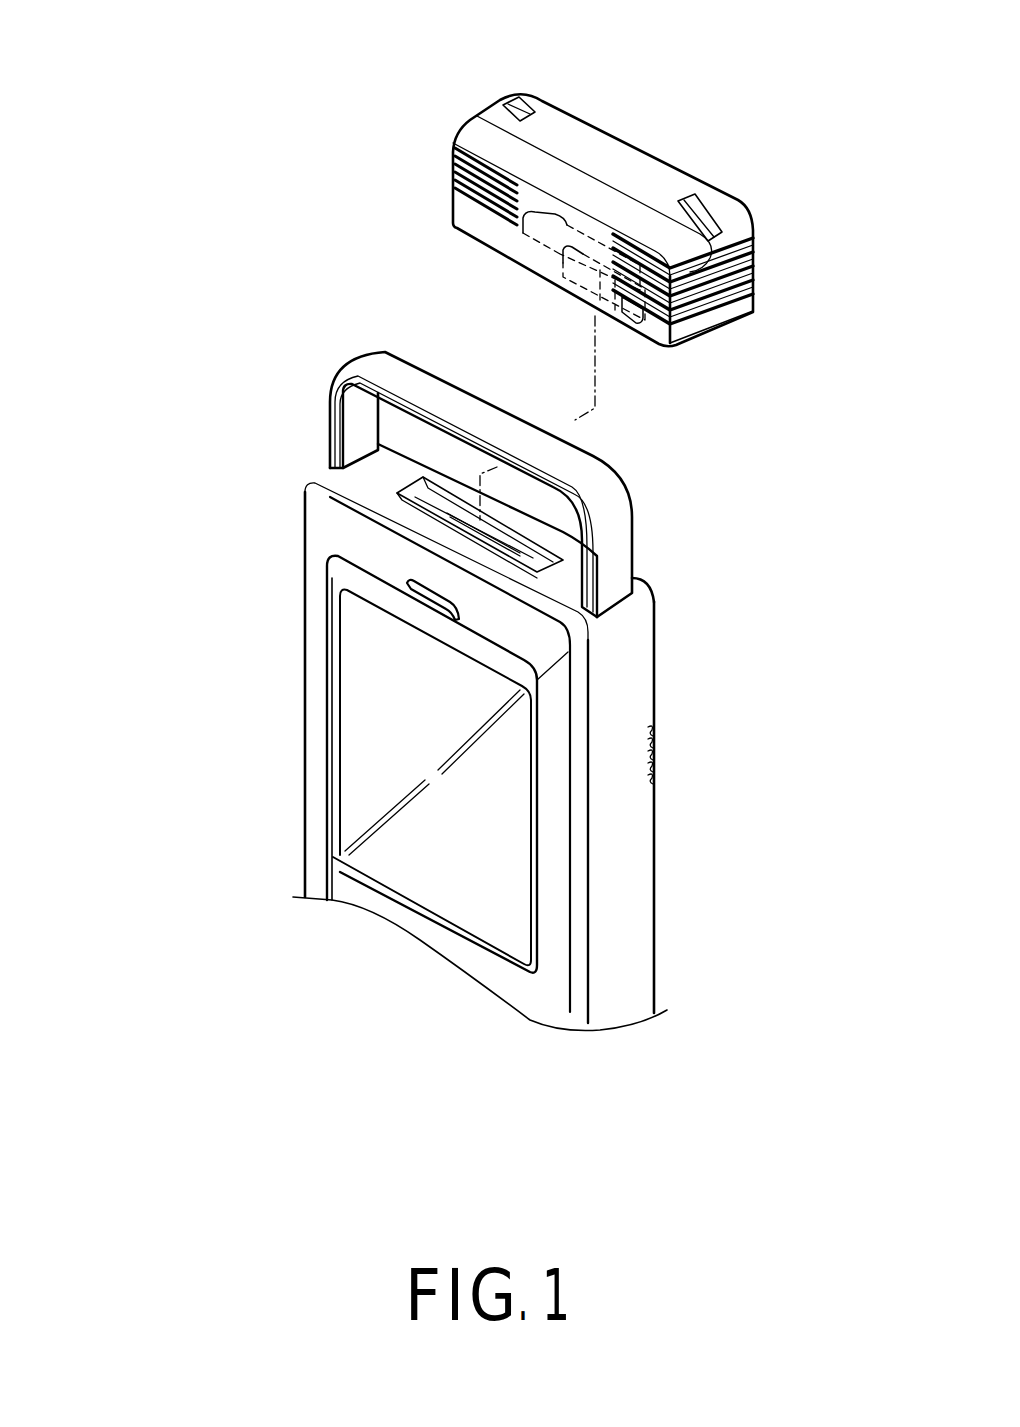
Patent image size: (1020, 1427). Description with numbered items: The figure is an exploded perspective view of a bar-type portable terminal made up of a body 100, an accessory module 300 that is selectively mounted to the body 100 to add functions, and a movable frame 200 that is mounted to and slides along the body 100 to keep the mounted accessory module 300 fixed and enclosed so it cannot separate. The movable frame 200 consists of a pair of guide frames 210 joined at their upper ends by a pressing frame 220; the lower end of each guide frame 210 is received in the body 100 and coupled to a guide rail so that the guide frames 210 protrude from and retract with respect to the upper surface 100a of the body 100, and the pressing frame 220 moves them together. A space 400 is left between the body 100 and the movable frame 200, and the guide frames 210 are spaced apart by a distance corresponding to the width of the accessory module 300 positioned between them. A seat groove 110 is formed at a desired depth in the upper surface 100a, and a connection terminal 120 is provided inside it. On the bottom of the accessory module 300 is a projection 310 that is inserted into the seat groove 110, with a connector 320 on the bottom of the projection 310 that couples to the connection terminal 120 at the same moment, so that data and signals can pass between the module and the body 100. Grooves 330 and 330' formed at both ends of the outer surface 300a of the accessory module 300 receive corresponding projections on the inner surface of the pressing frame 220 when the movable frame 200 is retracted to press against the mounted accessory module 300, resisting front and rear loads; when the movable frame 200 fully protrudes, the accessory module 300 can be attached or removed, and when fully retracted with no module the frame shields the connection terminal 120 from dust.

The body 100 is at (698, 760).
The upper surface 100a is at (360, 472).
The seat groove 110 is at (487, 490).
The connection terminal 120 is at (487, 533).
The movable frame 200 is at (668, 504).
The guide frame 210 is at (352, 411).
The pressing frame 220 is at (480, 405).
The accessory module 300 is at (590, 98).
The outer surface 300a is at (620, 152).
The projection 310 is at (540, 240).
The connector 320 is at (622, 327).
The groove 330 is at (512, 62).
The groove 330' is at (739, 189).
The space 400 is at (403, 420).